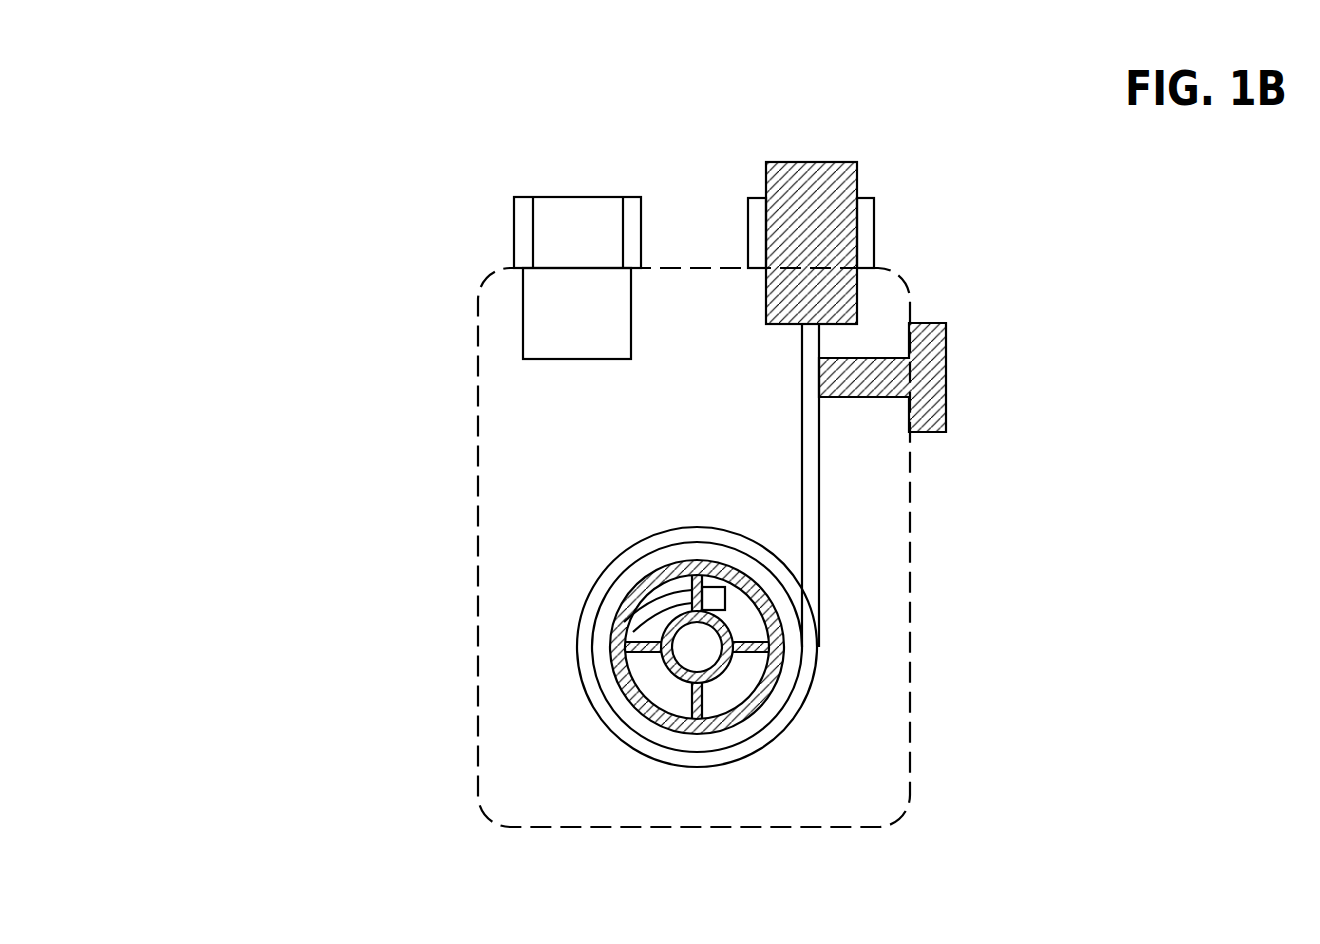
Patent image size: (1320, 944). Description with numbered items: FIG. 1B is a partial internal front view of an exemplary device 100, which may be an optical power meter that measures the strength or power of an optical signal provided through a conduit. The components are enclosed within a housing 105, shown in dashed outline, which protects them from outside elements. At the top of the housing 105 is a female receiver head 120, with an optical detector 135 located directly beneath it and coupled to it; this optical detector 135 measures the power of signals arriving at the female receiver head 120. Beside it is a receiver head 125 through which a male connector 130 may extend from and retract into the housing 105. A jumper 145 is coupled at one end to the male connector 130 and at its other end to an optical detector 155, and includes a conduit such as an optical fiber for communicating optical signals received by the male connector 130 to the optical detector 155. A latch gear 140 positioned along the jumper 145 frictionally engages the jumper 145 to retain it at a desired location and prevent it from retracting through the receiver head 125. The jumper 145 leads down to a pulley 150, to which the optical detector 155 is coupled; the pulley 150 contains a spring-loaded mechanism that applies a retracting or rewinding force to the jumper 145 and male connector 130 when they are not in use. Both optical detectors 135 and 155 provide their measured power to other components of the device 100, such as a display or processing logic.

The device 100 is at (238, 104).
The housing 105 is at (478, 483).
The female receiver head 120 is at (514, 232).
The receiver head 125 is at (876, 232).
The male connector 130 is at (811, 188).
The optical detector 135 is at (577, 313).
The latch gear 140 is at (926, 378).
The jumper 145 is at (810, 558).
The pulley 150 is at (773, 647).
The optical detector 155 is at (712, 598).